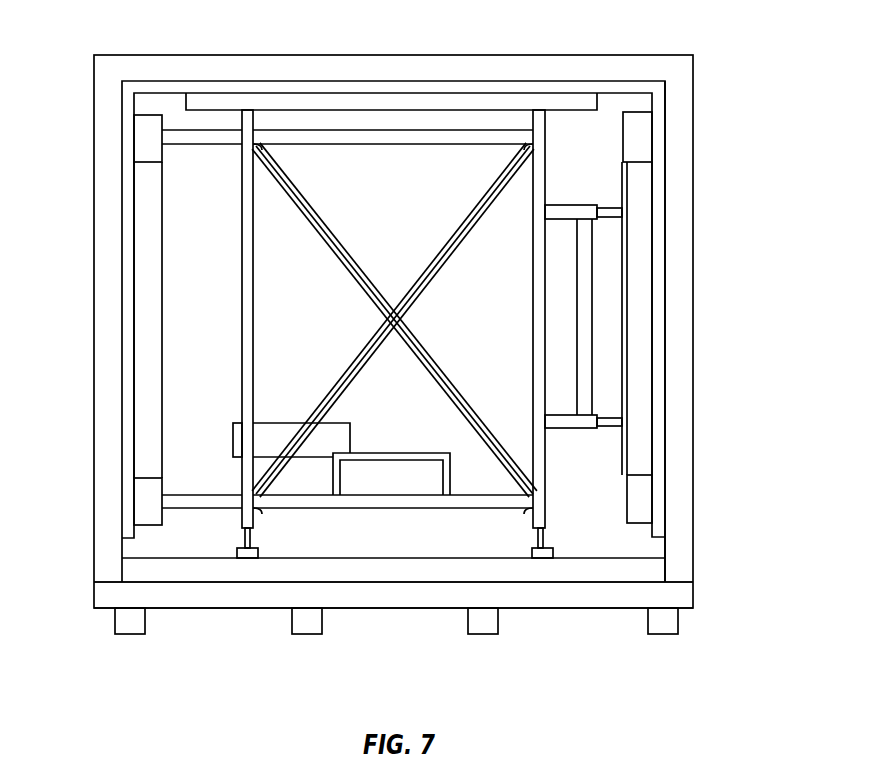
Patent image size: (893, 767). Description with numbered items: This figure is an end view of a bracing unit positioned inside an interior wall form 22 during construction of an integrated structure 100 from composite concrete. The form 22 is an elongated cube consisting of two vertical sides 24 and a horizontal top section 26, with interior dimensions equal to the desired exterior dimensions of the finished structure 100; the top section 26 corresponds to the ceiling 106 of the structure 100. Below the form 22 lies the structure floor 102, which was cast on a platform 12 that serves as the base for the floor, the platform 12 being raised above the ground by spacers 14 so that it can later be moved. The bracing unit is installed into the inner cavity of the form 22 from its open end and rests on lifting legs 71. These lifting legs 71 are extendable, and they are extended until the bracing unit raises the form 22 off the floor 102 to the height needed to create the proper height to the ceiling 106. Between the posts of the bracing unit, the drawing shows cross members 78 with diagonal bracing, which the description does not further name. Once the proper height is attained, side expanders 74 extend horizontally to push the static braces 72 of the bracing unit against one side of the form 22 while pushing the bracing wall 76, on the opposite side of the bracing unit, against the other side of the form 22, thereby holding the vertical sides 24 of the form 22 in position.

The ceiling 106 is at (248, 42).
The platform 12 is at (272, 596).
The spacers 14 is at (307, 622).
The structure floor 102 is at (421, 571).
The integrated structure 100 is at (681, 128).
The vertical sides 24 is at (127, 215).
The interior wall form 22 is at (657, 200).
The bracing wall 76 is at (637, 317).
The static braces 72 is at (147, 464).
The top section 26 is at (285, 92).
The shelf frame 78 is at (394, 133).
The side expanders 74 is at (580, 205).
The lifting legs 71 is at (247, 560).